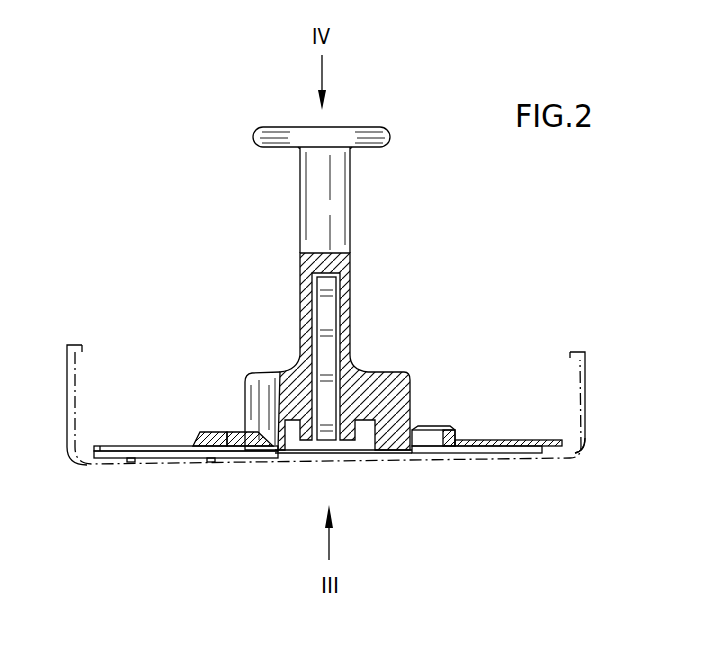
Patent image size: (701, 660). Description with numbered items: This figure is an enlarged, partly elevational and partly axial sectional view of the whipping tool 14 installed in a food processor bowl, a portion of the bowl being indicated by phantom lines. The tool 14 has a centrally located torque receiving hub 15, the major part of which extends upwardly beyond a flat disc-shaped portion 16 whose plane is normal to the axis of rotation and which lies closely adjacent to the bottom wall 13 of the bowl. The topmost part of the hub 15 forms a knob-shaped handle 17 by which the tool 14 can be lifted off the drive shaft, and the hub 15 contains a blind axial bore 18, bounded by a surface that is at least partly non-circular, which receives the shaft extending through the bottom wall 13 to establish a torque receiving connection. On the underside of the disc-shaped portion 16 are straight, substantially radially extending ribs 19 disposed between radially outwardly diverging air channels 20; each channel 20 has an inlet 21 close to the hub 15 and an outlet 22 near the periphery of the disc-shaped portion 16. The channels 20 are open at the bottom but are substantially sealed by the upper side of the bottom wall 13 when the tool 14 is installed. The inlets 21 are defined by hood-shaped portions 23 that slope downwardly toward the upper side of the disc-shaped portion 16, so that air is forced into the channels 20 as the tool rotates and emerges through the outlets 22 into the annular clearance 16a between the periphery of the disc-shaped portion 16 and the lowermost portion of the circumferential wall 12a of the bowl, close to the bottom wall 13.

The circumferential wall 12a is at (586, 378).
The bottom wall 13 is at (287, 456).
The whipping tool 14 is at (347, 277).
The hub 15 is at (372, 385).
The disc-shaped portion 16 is at (208, 446).
The annular clearance 16a is at (572, 448).
The handle 17 is at (392, 136).
The bore 18 is at (325, 306).
The ribs 19 is at (130, 462).
The air channels 20 is at (510, 455).
The inlet 21 is at (442, 432).
The outlet 22 is at (178, 458).
The hood-shaped portions 23 is at (238, 432).